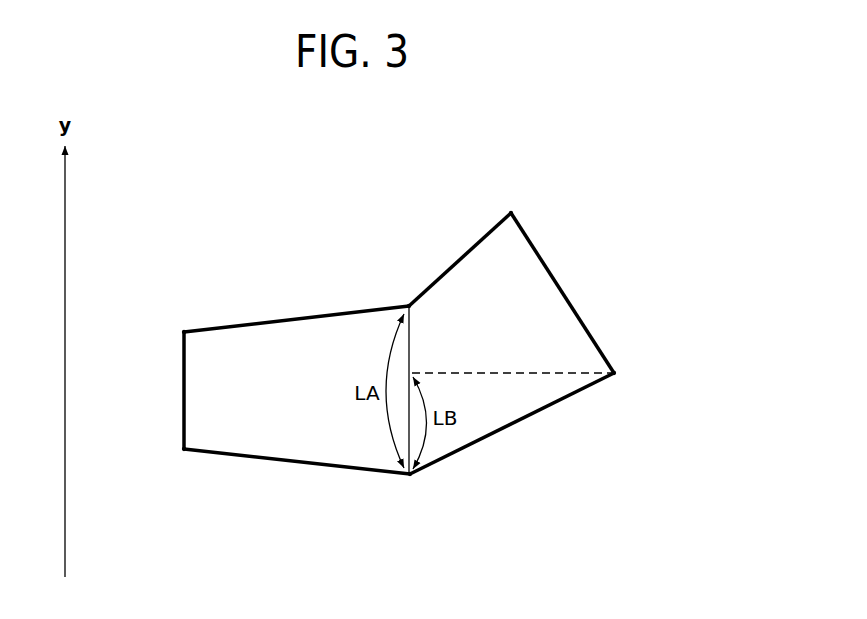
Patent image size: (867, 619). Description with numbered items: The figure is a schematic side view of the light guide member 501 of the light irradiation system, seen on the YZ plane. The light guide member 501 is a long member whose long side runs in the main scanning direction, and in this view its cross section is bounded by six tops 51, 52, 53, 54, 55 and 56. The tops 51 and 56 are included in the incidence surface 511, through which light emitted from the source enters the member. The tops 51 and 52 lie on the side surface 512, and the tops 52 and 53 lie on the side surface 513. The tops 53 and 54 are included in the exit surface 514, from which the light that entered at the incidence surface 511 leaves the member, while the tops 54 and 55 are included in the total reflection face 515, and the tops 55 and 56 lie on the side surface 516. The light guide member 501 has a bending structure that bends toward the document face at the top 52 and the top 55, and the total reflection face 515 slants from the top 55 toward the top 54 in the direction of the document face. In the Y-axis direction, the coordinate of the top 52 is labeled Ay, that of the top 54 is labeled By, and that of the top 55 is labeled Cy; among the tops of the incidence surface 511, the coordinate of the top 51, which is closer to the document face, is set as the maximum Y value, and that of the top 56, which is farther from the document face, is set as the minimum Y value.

The light guide member 501 is at (303, 202).
The top 51 is at (182, 331).
The top 52 is at (408, 305).
The top 53 is at (512, 212).
The top 54 is at (616, 375).
The top 55 is at (410, 478).
The top 56 is at (183, 452).
The incidence surface 511 is at (182, 393).
The side surface 512 is at (300, 318).
The side surface 513 is at (465, 254).
The exit surface 514 is at (564, 294).
The total reflection face 515 is at (565, 398).
The side surface 516 is at (293, 462).